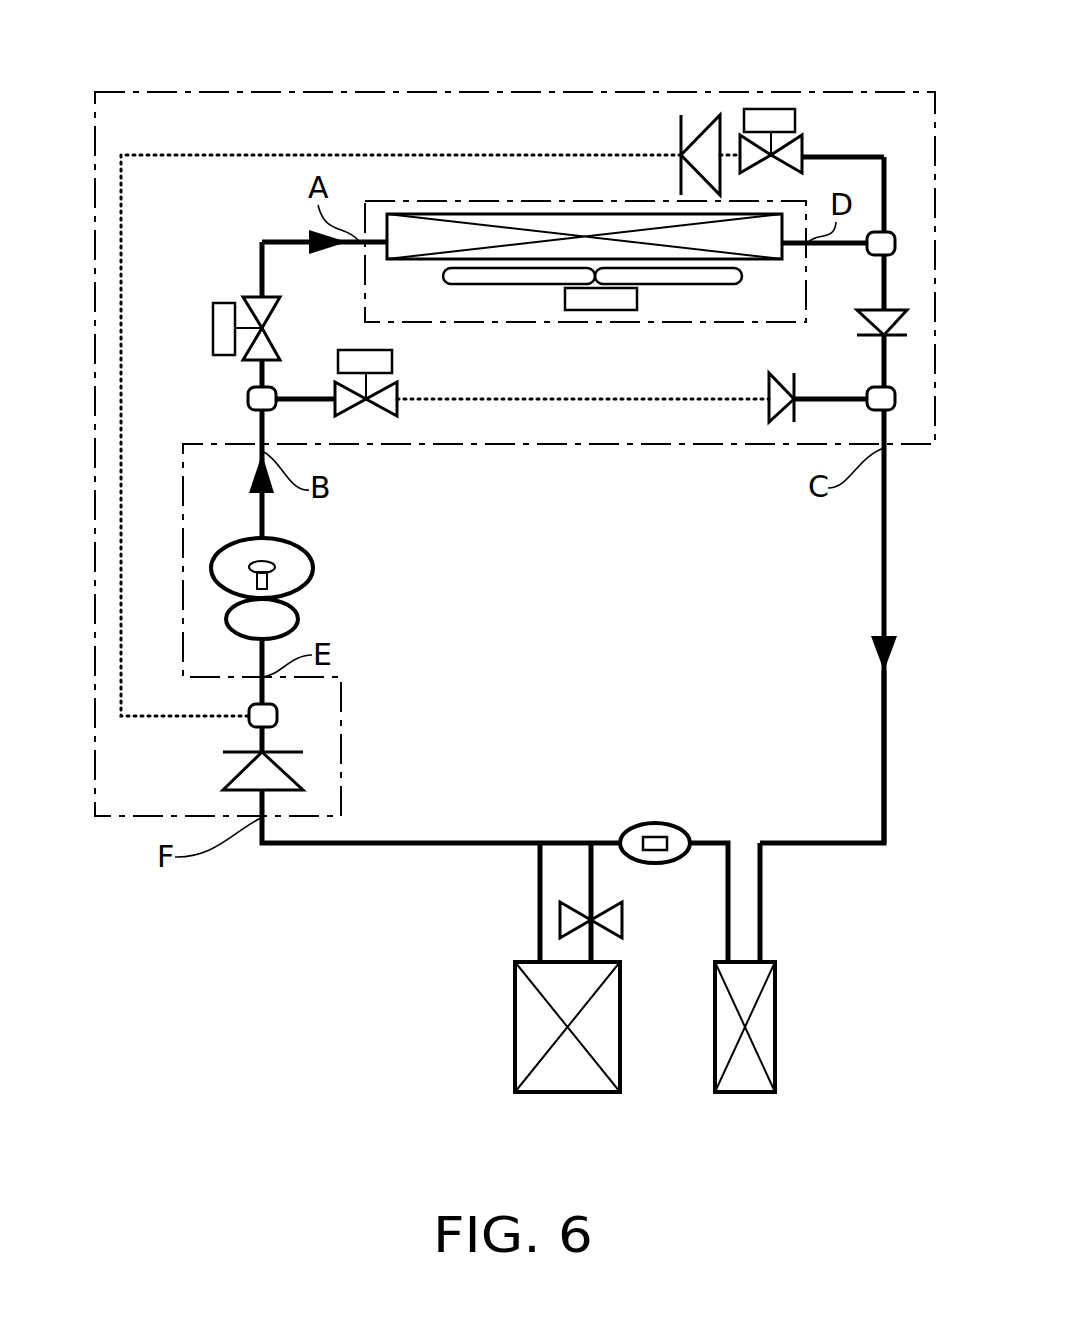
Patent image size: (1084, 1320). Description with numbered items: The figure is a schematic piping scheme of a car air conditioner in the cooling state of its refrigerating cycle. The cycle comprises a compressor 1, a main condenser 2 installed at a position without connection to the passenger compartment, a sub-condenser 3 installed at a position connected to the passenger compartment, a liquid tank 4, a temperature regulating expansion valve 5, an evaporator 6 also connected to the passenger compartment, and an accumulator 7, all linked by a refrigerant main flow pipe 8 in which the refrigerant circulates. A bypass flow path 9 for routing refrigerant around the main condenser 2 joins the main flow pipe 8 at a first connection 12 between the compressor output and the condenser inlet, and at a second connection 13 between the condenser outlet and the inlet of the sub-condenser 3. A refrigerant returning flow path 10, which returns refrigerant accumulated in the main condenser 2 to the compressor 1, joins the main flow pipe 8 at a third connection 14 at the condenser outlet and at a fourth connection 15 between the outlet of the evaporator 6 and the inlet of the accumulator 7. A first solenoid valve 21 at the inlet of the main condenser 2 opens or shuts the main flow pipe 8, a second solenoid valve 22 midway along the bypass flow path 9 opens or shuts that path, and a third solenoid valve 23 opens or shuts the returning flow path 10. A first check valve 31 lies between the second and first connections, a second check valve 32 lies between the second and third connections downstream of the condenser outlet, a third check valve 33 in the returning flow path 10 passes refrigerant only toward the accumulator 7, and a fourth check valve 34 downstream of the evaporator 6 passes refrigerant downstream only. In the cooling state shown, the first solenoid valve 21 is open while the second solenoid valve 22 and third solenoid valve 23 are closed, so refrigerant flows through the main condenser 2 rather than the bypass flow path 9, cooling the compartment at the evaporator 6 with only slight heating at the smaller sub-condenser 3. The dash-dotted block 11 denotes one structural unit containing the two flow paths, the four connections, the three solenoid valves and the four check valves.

The compressor 1 is at (313, 568).
The main condenser 2 is at (401, 262).
The sub-condenser 3 is at (775, 1025).
The liquid tank 4 is at (655, 823).
The temperature regulating expansion valve 5 is at (622, 920).
The evaporator 6 is at (515, 1025).
The accumulator 7 is at (298, 619).
The refrigerant main flow pipe 8 is at (886, 733).
The bypass flow path 9 is at (583, 399).
The refrigerant returning flow path 10 is at (390, 155).
The block 11 is at (521, 30).
The first connection 12 is at (247, 399).
The second connection 13 is at (867, 395).
The third connection 14 is at (895, 245).
The fourth connection 15 is at (277, 715).
The first solenoid valve 21 is at (243, 300).
The second solenoid valve 22 is at (397, 392).
The third solenoid valve 23 is at (802, 150).
The first check valve 31 is at (769, 395).
The second check valve 32 is at (857, 318).
The third check valve 33 is at (681, 140).
The fourth check valve 34 is at (240, 776).